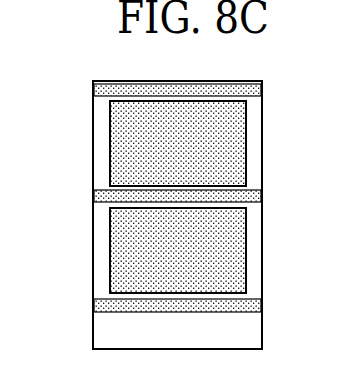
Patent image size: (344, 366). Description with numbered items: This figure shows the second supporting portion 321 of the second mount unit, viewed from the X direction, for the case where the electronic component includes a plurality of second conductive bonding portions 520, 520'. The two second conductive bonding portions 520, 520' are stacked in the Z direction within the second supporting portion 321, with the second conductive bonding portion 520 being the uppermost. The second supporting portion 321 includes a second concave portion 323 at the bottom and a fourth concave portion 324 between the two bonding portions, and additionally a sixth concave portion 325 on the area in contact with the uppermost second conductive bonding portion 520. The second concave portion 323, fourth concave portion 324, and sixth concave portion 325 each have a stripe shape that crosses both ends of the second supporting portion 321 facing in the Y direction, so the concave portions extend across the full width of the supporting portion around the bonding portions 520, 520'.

The second supporting portion 321 is at (93, 242).
The second concave portion 323 is at (95, 304).
The fourth concave portion 324 is at (95, 195).
The sixth concave portion 325 is at (95, 87).
The second conductive bonding portion 520 is at (208, 143).
The second conductive bonding portion 520' is at (211, 250).